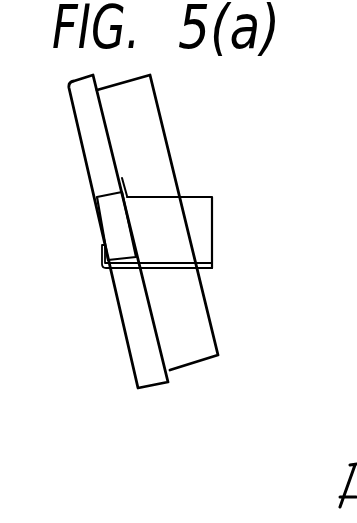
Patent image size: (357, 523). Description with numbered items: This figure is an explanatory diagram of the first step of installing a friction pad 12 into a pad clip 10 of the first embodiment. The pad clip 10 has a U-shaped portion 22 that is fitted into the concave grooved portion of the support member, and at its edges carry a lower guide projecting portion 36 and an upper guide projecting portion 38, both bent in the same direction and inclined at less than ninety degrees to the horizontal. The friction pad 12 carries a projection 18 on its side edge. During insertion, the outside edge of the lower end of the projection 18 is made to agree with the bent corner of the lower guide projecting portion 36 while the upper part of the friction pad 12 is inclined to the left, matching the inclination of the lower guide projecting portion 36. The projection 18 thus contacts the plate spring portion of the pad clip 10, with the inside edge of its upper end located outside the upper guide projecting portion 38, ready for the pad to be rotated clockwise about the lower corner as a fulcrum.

The pad clip 10 is at (213, 248).
The friction pad 12 is at (152, 138).
The projection 18 is at (110, 212).
The U-shaped portion 22 is at (202, 227).
The lower guide projecting portion 36 is at (102, 259).
The upper guide projecting portion 38 is at (125, 191).